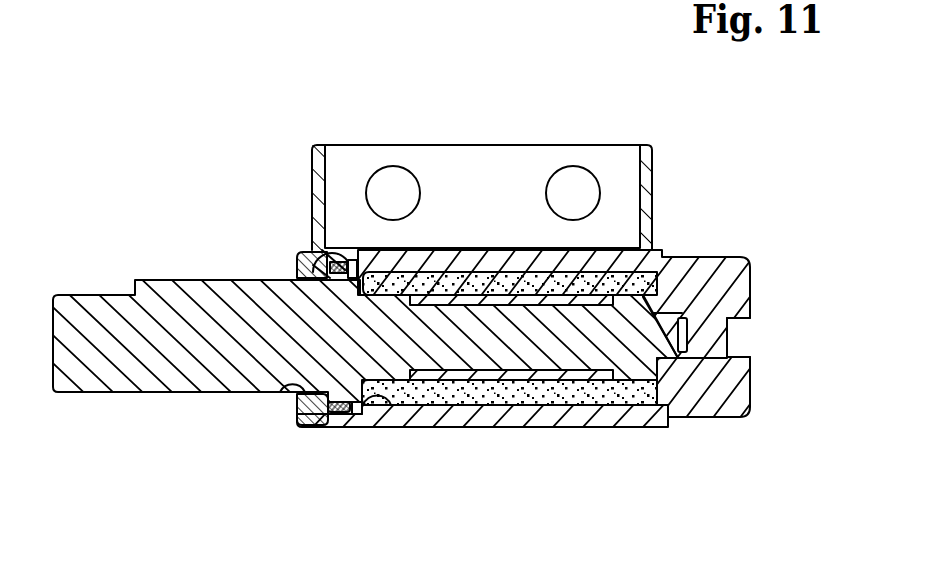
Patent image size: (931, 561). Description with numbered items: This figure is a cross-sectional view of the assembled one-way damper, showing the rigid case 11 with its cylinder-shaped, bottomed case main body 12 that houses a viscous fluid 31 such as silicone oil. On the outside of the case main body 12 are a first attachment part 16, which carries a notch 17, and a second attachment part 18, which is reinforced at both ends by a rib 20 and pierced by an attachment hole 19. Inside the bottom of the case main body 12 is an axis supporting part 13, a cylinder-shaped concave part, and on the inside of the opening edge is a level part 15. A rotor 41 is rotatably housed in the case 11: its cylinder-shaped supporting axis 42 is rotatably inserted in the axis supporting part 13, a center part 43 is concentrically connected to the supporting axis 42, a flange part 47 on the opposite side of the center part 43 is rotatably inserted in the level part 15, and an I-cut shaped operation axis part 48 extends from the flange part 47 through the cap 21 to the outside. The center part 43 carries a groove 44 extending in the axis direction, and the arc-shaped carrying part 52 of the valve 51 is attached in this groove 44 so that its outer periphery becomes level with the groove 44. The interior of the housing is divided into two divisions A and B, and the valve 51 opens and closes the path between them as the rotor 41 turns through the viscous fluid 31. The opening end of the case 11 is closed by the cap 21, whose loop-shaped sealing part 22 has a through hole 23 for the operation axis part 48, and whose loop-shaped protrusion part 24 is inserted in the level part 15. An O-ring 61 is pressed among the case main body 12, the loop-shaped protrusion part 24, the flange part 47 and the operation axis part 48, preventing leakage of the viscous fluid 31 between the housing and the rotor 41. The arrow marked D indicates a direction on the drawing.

The case 11 is at (706, 430).
The case main body 12 is at (645, 420).
The axis supporting part 13 is at (692, 357).
The level part 15 is at (386, 400).
The first attachment part 16 is at (728, 284).
The notch 17 is at (735, 335).
The second attachment part 18 is at (476, 180).
The attachment hole 19 is at (392, 178).
The rib 20 is at (317, 183).
The cap 21 is at (292, 266).
The sealing part 22 is at (303, 418).
The through hole 23 is at (284, 388).
The loop-shaped protrusion part 24 is at (333, 412).
The viscous fluid 31 is at (578, 420).
The rotor 41 is at (162, 400).
The supporting axis 42 is at (667, 326).
The center part 43 is at (458, 348).
The groove 44 is at (490, 355).
The flange part 47 is at (338, 265).
The operation axis part 48 is at (170, 323).
The valve 51 is at (510, 283).
The carrying part 52 is at (528, 382).
The O-ring 61 is at (318, 251).
The division A is at (623, 287).
The division B is at (673, 384).
The direction D is at (638, 130).